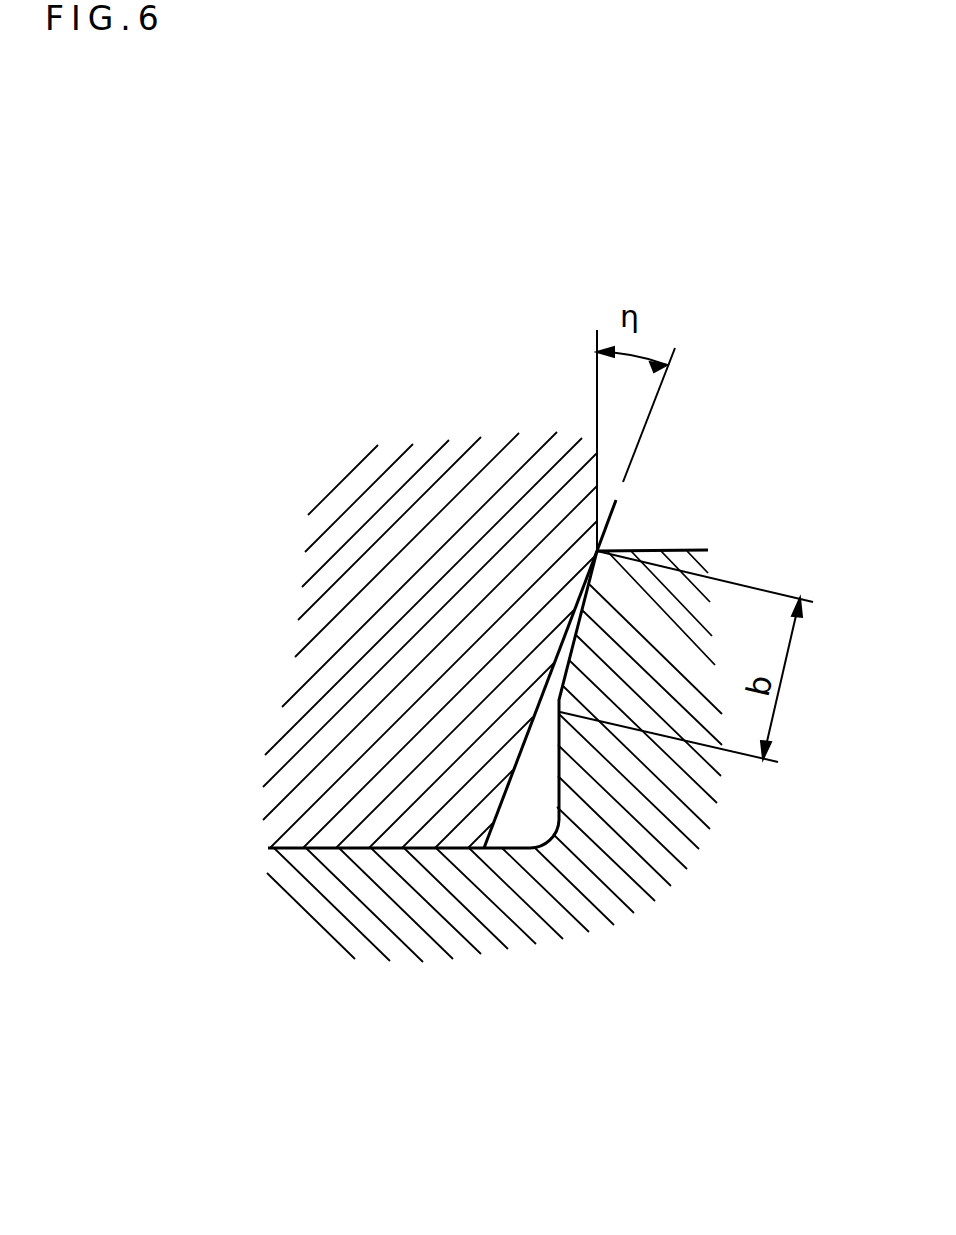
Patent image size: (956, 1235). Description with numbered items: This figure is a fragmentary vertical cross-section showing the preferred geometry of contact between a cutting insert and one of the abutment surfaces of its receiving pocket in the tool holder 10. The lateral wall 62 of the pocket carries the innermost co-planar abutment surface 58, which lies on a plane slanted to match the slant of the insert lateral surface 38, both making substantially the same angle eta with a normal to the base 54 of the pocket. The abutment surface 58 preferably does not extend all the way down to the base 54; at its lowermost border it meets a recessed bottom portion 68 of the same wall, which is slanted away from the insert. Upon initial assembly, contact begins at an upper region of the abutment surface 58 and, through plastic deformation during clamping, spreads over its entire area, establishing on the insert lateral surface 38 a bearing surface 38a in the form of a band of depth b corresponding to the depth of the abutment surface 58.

The cutter body 10 is at (348, 773).
The insert lateral surface 38 is at (525, 740).
The bearing surface 38a is at (578, 602).
The base 54 is at (418, 851).
The abutment surface 58 is at (592, 600).
The lateral wall 62 is at (693, 612).
The recessed bottom portion 68 is at (560, 790).